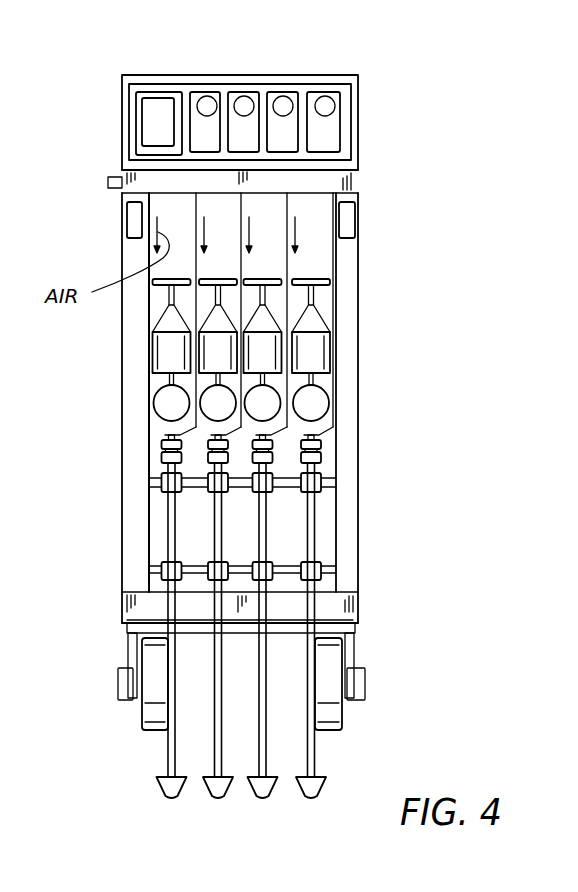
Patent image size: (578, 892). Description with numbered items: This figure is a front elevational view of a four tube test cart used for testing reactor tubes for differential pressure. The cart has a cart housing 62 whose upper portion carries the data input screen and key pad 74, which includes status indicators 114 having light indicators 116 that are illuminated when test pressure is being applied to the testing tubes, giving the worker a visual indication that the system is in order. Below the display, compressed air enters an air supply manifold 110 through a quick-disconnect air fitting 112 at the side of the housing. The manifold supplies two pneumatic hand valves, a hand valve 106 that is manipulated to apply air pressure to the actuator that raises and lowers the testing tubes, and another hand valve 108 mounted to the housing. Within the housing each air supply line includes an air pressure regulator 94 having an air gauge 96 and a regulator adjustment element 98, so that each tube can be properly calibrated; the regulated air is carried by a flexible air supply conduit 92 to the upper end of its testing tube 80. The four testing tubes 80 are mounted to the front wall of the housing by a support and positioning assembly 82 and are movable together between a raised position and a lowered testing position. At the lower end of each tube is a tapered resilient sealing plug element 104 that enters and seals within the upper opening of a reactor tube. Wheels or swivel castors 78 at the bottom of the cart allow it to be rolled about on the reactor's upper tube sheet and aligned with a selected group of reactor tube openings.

The cart housing 62 is at (363, 80).
The data input screen and key pad 74 is at (185, 91).
The status indicators 114 is at (297, 92).
The light indicators 116 is at (327, 100).
The quick-disconnect air fitting 112 is at (110, 178).
The air supply manifold 110 is at (360, 178).
The hand valve 108 is at (130, 220).
The hand valve 106 is at (350, 218).
The regulator adjustment element 98 is at (312, 281).
The air pressure regulator 94 is at (318, 350).
The air gauge 96 is at (320, 398).
The air supply conduit 92 is at (177, 430).
The support and positioning assembly 82 is at (162, 478).
The testing tube 80 is at (167, 532).
The wheels or swivel castors 78 is at (150, 713).
The resilient sealing plug element 104 is at (215, 787).